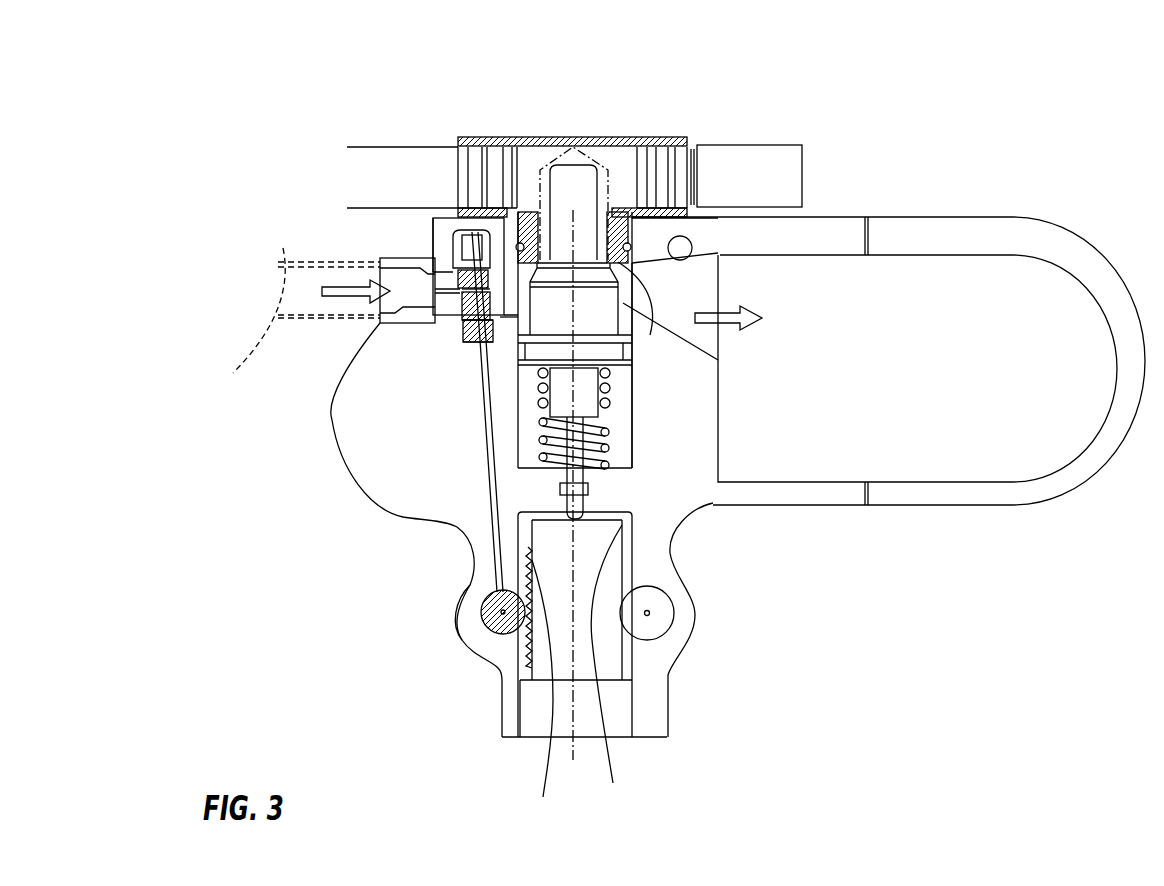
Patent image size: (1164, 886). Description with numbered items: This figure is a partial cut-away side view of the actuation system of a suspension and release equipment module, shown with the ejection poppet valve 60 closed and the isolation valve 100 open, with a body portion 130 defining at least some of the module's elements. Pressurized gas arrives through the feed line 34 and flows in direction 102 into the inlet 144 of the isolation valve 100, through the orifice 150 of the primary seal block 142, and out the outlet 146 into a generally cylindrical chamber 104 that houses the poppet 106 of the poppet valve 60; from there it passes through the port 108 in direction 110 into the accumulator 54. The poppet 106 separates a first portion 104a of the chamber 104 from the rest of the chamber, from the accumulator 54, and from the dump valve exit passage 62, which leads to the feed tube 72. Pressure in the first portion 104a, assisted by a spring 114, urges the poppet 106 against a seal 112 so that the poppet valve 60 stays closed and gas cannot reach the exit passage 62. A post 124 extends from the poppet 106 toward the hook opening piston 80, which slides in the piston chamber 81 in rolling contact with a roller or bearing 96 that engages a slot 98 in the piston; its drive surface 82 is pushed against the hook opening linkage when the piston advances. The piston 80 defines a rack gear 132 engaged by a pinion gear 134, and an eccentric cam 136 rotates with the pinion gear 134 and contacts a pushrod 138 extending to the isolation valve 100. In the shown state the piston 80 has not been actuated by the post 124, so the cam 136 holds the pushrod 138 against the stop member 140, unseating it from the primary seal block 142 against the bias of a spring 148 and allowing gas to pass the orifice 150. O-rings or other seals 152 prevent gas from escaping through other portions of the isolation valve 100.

The feed line 34 is at (248, 366).
The accumulator 54 is at (1000, 215).
The ejection poppet valve 60 is at (638, 299).
The dump valve exit passage 62 is at (567, 150).
The feed tube 72 is at (403, 147).
The hook opening piston 80 is at (618, 658).
The piston chamber 81 is at (632, 717).
The drive surface 82 is at (527, 683).
The roller or bearing 96 is at (663, 620).
The slot 98 is at (610, 668).
The isolation valve 100 is at (447, 235).
The flow direction 102 is at (337, 312).
The chamber 104 is at (487, 393).
The first portion of the chamber 104a is at (616, 417).
The poppet 106 is at (547, 147).
The port 108 is at (752, 303).
The flow direction 110 is at (790, 253).
The seal 112 is at (603, 160).
The spring 114 is at (607, 447).
The post 124 is at (588, 490).
The body portion 130 is at (490, 493).
The rack gear 132 is at (576, 678).
The pinion gear 134 is at (497, 640).
The cam 136 is at (487, 620).
The pushrod 138 is at (412, 493).
The stop member 140 is at (477, 342).
The primary seal block 142 is at (468, 318).
The inlet 144 is at (460, 275).
The outlet 146 is at (500, 160).
The spring 148 is at (455, 240).
The orifice 150 is at (470, 328).
The O-rings or seals 152 is at (437, 248).